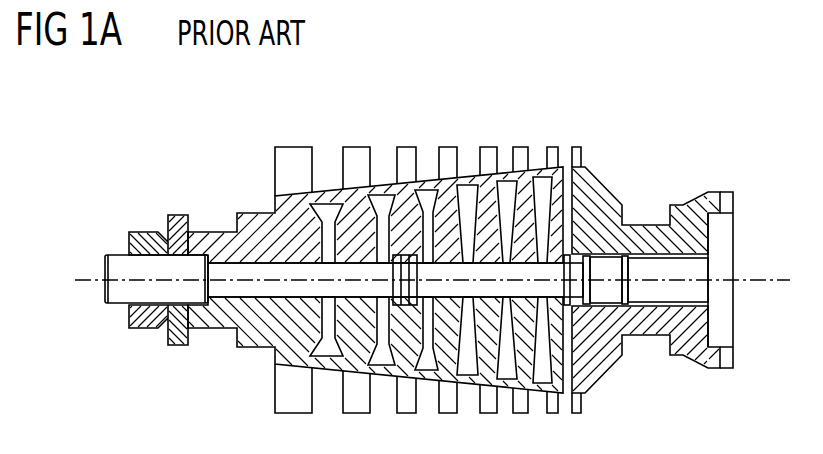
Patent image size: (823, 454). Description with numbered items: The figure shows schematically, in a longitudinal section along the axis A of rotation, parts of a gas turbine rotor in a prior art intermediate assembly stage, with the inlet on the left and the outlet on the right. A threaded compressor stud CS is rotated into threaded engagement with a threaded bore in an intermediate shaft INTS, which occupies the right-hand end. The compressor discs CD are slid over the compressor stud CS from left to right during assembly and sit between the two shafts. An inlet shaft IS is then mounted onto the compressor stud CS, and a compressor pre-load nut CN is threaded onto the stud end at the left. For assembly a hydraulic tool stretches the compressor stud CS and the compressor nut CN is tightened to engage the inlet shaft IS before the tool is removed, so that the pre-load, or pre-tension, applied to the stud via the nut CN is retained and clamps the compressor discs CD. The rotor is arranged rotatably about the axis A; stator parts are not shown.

The compressor stud CS is at (224, 265).
The inlet shaft IS is at (228, 232).
The compressor pre-load nut CN is at (145, 317).
The compressor discs CD is at (435, 187).
The intermediate shaft INTS is at (647, 228).
The axis of rotation A is at (760, 279).